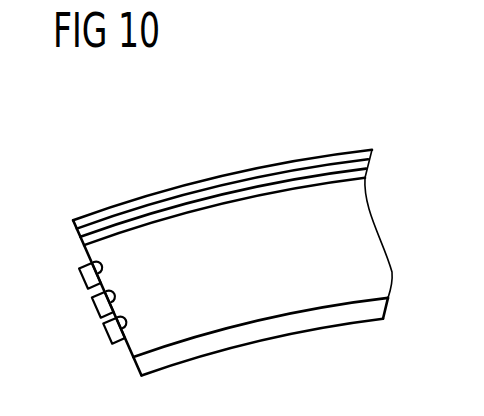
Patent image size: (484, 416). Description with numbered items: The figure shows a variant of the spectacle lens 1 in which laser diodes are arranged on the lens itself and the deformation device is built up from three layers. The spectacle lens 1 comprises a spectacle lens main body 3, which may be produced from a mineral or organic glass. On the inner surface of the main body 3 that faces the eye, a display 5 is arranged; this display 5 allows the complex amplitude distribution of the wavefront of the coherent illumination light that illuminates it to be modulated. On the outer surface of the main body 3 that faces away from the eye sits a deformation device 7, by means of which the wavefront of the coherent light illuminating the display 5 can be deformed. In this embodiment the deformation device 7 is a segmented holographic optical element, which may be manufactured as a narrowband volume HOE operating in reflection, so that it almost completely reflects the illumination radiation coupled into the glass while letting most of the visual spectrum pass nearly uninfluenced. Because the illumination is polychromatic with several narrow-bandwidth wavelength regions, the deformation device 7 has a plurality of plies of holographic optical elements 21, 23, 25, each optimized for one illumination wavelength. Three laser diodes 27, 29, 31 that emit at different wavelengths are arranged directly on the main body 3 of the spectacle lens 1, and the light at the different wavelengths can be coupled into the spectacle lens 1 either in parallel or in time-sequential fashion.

The spectacle lens 1 is at (315, 110).
The spectacle lens main body 3 is at (365, 231).
The display 5 is at (277, 327).
The deformation device 7 is at (380, 148).
The holographic optical element ply 21 is at (175, 195).
The holographic optical element ply 23 is at (215, 197).
The holographic optical element ply 25 is at (267, 194).
The laser diode 27 is at (80, 277).
The laser diode 29 is at (84, 302).
The laser diode 31 is at (101, 333).